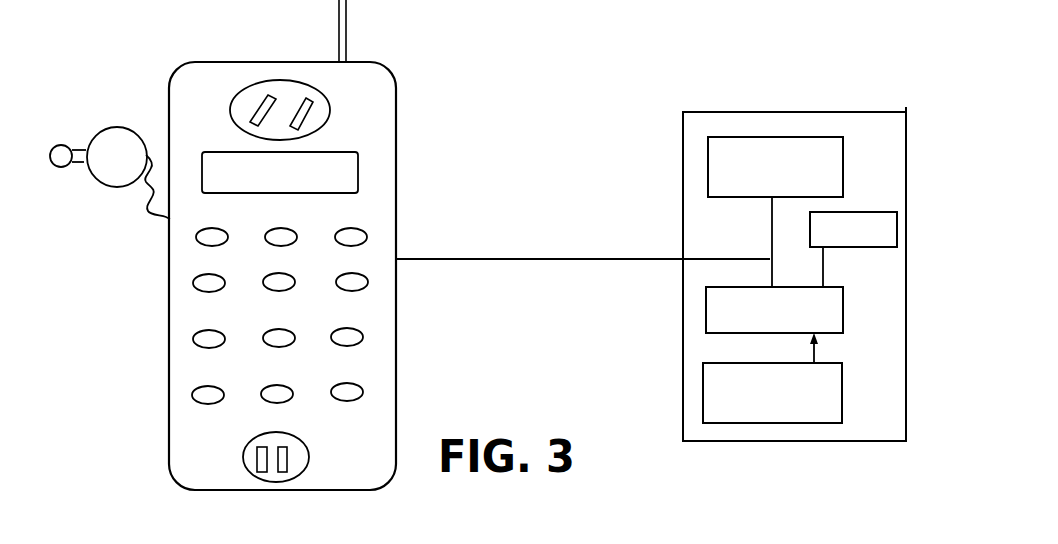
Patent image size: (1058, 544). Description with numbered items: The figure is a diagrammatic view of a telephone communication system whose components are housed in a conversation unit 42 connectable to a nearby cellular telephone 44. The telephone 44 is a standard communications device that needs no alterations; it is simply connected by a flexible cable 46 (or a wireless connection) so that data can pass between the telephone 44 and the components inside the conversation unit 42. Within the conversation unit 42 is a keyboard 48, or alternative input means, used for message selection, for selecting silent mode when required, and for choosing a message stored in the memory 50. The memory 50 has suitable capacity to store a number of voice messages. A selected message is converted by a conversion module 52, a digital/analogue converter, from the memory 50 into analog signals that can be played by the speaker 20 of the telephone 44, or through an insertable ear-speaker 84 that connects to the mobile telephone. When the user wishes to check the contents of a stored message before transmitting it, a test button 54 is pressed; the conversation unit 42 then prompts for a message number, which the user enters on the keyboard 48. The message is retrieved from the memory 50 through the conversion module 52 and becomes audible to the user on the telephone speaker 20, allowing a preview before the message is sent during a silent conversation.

The speaker 20 is at (260, 87).
The cellular telephone 44 is at (383, 105).
The insertable ear-speaker 84 is at (138, 93).
The flexible cable 46 is at (505, 259).
The conversation unit 42 is at (878, 115).
The keyboard 48 is at (768, 138).
The test button 54 is at (893, 222).
The conversion module 52 is at (713, 322).
The memory 50 is at (772, 410).